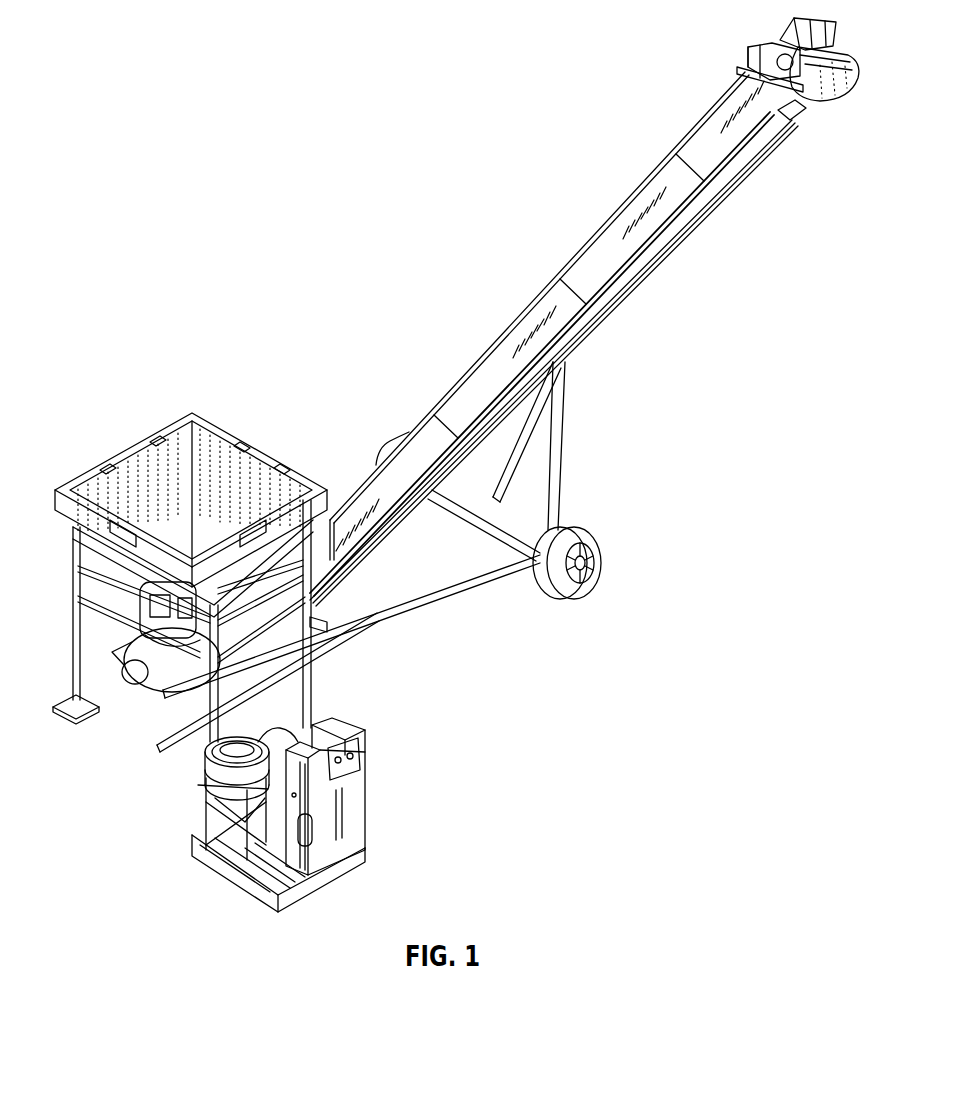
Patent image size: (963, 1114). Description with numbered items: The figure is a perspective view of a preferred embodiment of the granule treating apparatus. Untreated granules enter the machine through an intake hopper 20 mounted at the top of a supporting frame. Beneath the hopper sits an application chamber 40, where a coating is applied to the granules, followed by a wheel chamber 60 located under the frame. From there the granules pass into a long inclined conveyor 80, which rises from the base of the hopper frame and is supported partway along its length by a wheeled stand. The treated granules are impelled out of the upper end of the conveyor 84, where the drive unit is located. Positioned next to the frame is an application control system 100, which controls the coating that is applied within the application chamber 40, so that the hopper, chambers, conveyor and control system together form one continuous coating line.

The intake hopper 20 is at (205, 468).
The application chamber 40 is at (82, 573).
The wheel chamber 60 is at (140, 676).
The conveyor 80 is at (668, 190).
The upper end of the conveyor 84 is at (848, 55).
The application control system 100 is at (357, 827).